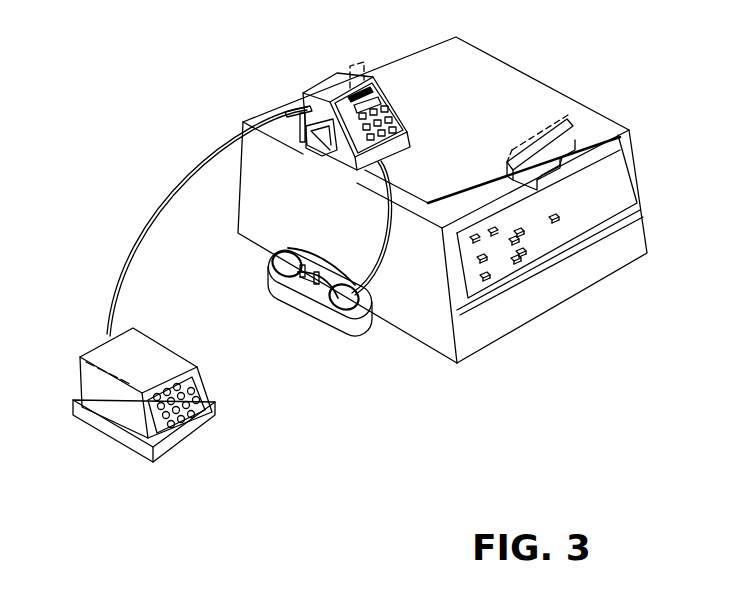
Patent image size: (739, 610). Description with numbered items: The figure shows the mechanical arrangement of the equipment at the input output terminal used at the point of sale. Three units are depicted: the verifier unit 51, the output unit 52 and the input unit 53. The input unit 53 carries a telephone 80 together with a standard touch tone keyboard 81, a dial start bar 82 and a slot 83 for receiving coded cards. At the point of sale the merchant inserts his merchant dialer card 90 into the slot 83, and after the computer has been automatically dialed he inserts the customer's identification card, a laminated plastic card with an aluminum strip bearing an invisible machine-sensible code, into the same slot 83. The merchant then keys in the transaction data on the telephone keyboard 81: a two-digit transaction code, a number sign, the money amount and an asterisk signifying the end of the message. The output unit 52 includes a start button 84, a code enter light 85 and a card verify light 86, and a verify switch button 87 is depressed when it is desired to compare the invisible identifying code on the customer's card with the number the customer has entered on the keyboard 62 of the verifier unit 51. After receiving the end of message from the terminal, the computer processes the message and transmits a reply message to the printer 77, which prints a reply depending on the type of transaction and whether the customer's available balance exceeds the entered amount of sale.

The verifier unit 51 is at (90, 475).
The output unit 52 is at (457, 411).
The input unit 53 is at (325, 90).
The keyboard 62 is at (198, 424).
The printer 77 is at (548, 128).
The telephone 80 is at (308, 303).
The standard touch tone keyboard 81 is at (392, 115).
The dial start bar 82 is at (381, 100).
The slot 83 is at (372, 88).
The start button 84 is at (490, 258).
The code enter light 85 is at (523, 231).
The card verify light 86 is at (527, 250).
The verify switch button 87 is at (560, 218).
The merchant dialer card 90 is at (362, 58).